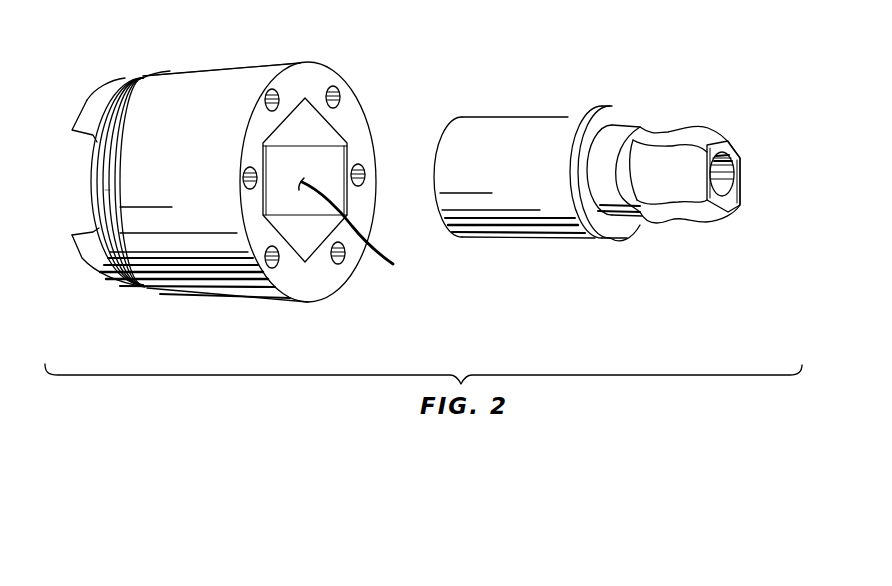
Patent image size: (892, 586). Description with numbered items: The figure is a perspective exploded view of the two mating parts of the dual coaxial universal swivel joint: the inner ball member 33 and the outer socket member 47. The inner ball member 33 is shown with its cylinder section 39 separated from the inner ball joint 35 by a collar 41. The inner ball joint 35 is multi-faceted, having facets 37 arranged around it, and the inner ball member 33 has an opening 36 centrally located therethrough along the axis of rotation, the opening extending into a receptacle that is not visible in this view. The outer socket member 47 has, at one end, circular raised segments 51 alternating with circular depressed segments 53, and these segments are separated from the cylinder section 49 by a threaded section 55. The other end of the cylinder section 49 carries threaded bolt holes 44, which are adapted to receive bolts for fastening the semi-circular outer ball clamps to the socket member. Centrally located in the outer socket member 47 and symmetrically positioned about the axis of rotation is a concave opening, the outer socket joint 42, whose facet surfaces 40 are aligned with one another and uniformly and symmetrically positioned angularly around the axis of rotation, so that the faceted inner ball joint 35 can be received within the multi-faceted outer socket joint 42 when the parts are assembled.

The inner ball member 33 is at (615, 137).
The inner ball joint 35 is at (727, 141).
The opening 36 is at (730, 182).
The facets 37 is at (682, 137).
The cylinder section 39 is at (503, 122).
The facet surfaces 40 is at (300, 124).
The collar 41 is at (604, 234).
The outer socket joint 42 is at (360, 232).
The threaded bolt holes 44 is at (272, 105).
The outer socket member 47 is at (250, 60).
The cylinder section 49 is at (192, 85).
The circular raised segments 51 is at (87, 97).
The circular depressed segments 53 is at (88, 180).
The threaded section 55 is at (140, 78).